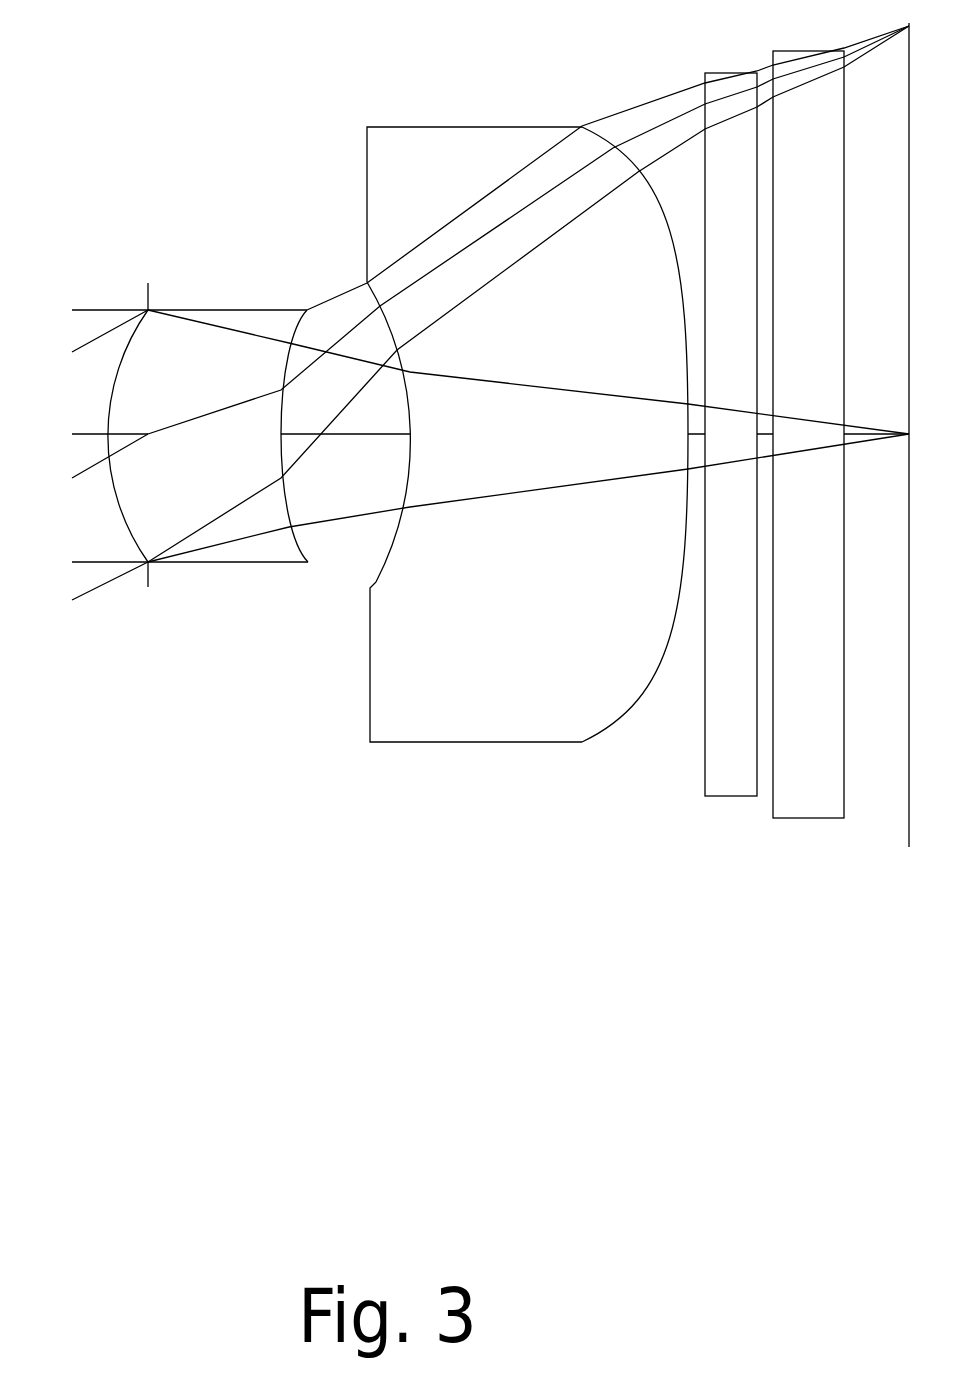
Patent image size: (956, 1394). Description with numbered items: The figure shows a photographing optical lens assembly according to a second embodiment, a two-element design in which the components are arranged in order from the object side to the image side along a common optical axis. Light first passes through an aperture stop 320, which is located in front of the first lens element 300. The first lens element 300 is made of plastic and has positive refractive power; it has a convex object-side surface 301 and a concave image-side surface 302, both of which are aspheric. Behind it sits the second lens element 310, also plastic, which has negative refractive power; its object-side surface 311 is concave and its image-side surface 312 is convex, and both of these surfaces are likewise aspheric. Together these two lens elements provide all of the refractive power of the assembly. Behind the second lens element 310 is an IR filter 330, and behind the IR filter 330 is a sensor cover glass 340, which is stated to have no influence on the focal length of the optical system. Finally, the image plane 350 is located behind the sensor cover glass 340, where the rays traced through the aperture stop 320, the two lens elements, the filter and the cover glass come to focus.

The first lens element 300 is at (191, 446).
The object-side surface 301 is at (123, 516).
The image-side surface 302 is at (293, 496).
The second lens element 310 is at (458, 491).
The object-side surface 311 is at (405, 405).
The image-side surface 312 is at (644, 697).
The aperture stop 320 is at (147, 294).
The IR filter 330 is at (728, 748).
The sensor cover glass 340 is at (805, 770).
The image plane 350 is at (910, 780).